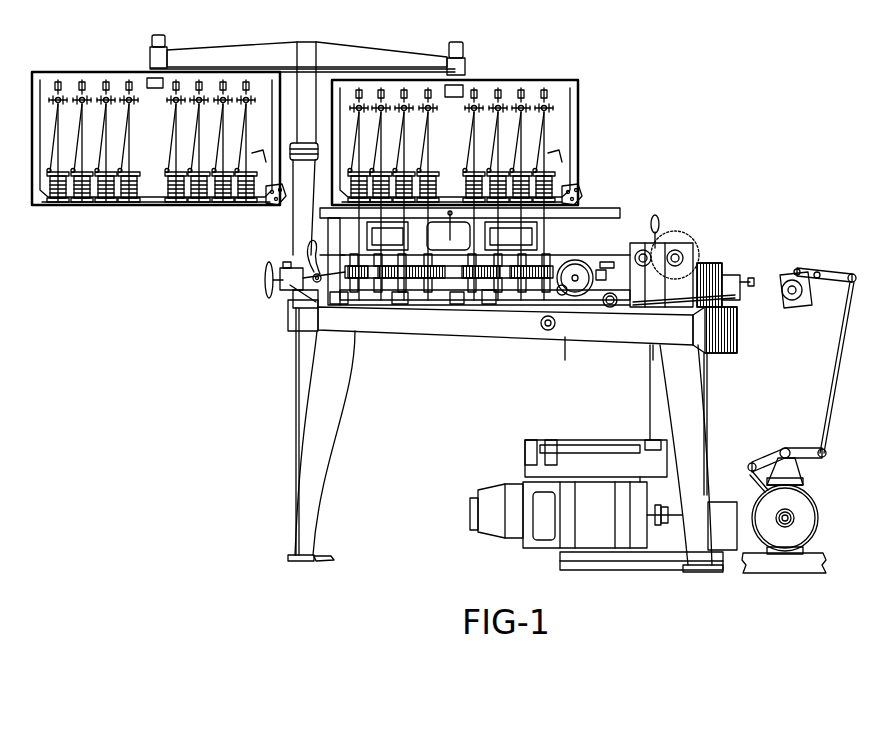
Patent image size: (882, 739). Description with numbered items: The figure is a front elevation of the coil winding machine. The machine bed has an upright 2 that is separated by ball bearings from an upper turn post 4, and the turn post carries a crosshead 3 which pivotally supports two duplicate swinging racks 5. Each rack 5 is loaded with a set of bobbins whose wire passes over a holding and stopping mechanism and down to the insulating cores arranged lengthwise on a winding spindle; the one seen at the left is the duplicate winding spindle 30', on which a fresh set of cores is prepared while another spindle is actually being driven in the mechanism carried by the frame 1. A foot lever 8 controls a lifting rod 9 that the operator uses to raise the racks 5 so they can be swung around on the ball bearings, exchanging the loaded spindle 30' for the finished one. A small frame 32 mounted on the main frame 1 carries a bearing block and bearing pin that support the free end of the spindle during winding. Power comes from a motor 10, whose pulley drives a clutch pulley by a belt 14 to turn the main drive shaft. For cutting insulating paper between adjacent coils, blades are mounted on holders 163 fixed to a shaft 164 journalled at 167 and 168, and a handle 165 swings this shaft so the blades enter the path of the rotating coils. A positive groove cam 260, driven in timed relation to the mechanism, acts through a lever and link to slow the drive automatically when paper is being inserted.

The frame 1 is at (412, 325).
The upright 2 is at (300, 215).
The crosshead 3 is at (327, 54).
The upper turn post 4 is at (306, 104).
The rack 5 is at (38, 128).
The foot lever 8 is at (330, 557).
The lifting rod 9 is at (297, 383).
The motor 10 is at (513, 520).
The belt 14 is at (708, 430).
The duplicate winding spindle 30' is at (302, 190).
The small frame 32 is at (298, 272).
The holder 163 is at (489, 298).
The shaft 164 is at (457, 300).
The handle 165 is at (402, 300).
The journal 167 is at (339, 300).
The journal 168 is at (570, 303).
The positive groove cam 260 is at (803, 292).